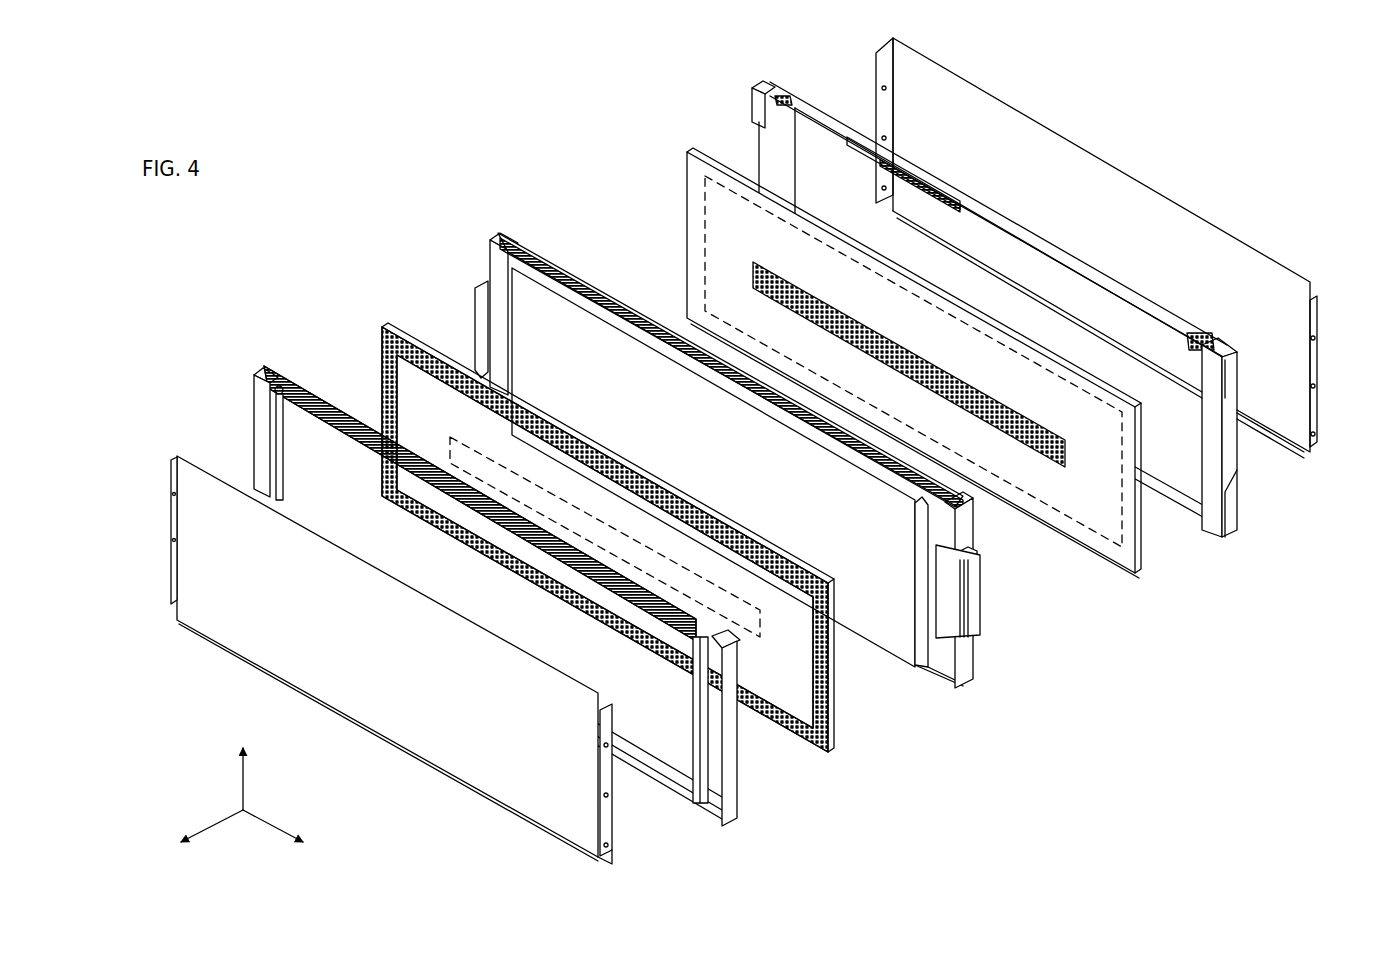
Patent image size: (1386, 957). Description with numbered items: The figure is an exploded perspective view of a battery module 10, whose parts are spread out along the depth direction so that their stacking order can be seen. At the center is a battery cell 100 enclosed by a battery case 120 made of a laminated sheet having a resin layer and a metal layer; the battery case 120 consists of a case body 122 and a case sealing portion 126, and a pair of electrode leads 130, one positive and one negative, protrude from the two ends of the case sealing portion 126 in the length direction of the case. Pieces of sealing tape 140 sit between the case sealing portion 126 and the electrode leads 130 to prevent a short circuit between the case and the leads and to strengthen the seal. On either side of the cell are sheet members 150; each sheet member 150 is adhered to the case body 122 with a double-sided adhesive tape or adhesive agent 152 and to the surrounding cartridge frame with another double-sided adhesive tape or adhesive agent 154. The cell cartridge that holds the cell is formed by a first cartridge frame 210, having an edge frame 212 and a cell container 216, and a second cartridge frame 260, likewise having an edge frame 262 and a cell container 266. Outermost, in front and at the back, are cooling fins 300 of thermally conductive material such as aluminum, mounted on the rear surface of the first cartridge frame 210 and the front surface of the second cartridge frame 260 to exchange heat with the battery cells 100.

The battery module 10 is at (1125, 102).
The battery cell 100 is at (768, 504).
The battery case 120 is at (735, 504).
The case body 122 is at (900, 647).
The case sealing portion 126 is at (938, 664).
The electrode lead 130 is at (973, 605).
The sealing tape 140 is at (969, 549).
The sheet member 150 is at (761, 467).
The double-sided adhesive tape or adhesive agent 152 is at (985, 397).
The double-sided adhesive tape or adhesive agent 154 is at (692, 234).
The first cartridge frame 210 is at (505, 602).
The edge frame 212 is at (257, 434).
The cell container 216 is at (275, 439).
The second cartridge frame 260 is at (1037, 318).
The edge frame 262 is at (1223, 452).
The cell container 266 is at (1202, 457).
The cooling fin 300 is at (437, 746).